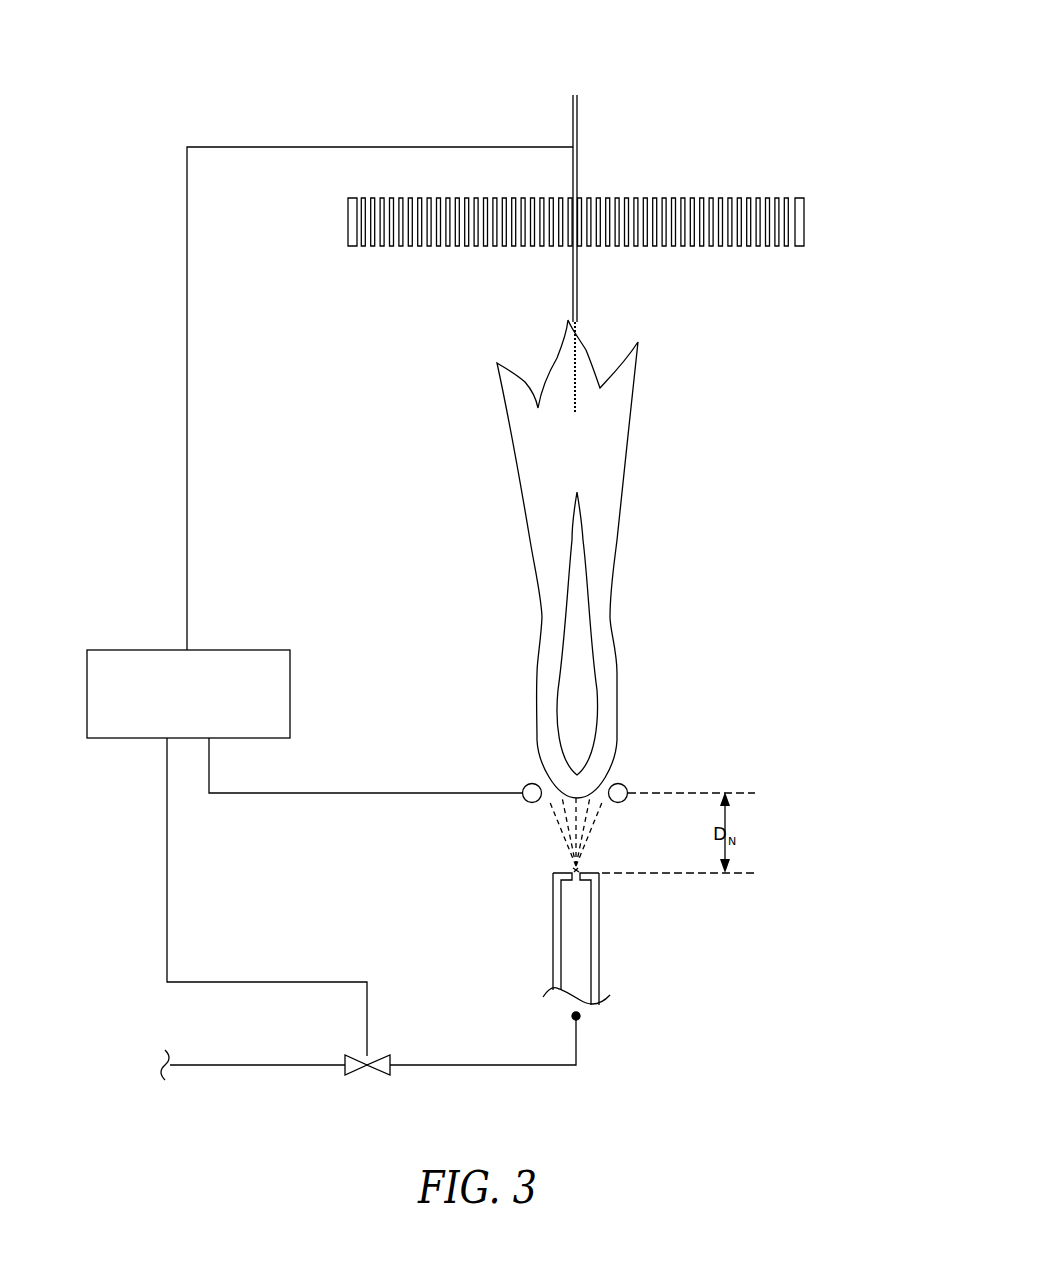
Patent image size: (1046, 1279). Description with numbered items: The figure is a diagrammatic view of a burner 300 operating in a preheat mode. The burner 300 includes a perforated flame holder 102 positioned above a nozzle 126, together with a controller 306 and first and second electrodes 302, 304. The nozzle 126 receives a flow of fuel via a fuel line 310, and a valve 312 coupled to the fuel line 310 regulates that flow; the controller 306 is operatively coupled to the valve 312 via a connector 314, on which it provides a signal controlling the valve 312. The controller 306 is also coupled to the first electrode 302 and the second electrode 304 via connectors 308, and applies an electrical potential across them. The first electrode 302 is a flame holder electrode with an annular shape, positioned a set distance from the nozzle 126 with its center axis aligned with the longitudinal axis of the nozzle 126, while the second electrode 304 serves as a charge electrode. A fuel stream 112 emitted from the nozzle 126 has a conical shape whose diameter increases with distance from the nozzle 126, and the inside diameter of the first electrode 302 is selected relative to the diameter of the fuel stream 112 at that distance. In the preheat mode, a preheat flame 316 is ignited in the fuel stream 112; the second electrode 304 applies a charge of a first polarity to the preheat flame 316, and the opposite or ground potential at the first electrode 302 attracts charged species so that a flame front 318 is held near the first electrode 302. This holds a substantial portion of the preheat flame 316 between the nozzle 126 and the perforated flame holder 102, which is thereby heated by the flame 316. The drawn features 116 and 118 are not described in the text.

The burner 300 is at (726, 50).
The perforated flame holder 102 is at (576, 230).
The fins 116 is at (722, 190).
The direction of movement 118 is at (402, 262).
The second electrode 304 is at (579, 281).
The preheat flame 316 is at (510, 433).
The controller 306 is at (152, 648).
The connectors 308 is at (187, 322).
The first electrode 302 is at (628, 786).
The connector 314 is at (166, 858).
The valve 312 is at (367, 1068).
The fuel line 310 is at (455, 1067).
The nozzle 126 is at (553, 890).
The fuel stream 112 is at (588, 837).
The flame front 318 is at (558, 805).